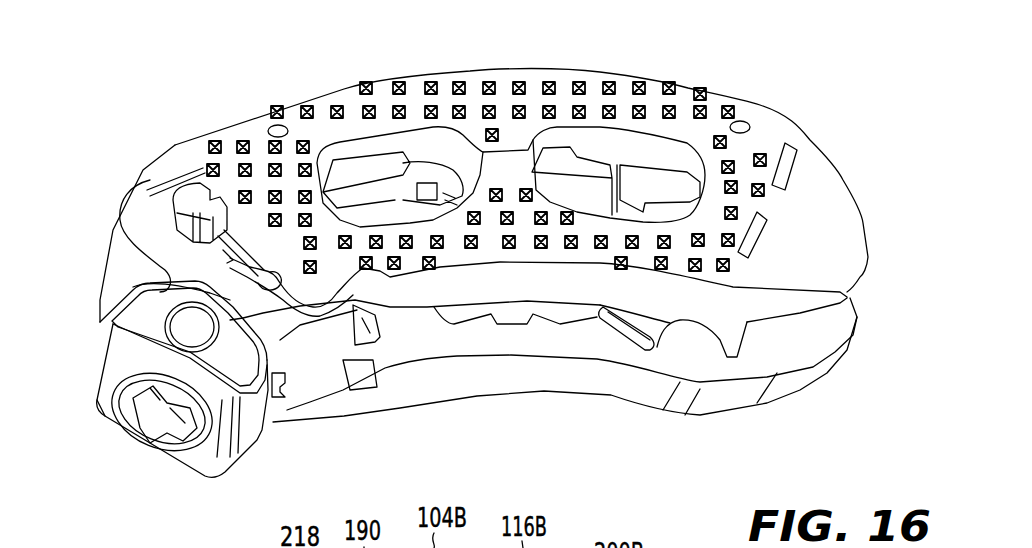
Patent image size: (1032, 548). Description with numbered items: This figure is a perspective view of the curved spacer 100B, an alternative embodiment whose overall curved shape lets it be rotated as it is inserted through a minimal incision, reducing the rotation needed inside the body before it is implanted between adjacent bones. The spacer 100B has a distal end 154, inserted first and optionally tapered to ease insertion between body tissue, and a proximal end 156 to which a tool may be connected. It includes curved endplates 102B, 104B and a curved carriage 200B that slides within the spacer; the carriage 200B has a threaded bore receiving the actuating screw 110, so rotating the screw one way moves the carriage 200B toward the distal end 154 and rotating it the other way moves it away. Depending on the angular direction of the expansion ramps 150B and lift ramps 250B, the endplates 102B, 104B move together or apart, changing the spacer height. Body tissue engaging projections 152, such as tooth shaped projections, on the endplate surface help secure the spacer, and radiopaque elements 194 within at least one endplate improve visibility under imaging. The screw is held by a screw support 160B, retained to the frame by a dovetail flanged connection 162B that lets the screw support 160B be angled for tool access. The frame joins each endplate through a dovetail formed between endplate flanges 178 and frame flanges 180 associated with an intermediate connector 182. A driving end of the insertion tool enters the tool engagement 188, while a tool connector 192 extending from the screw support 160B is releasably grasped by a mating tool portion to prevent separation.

The spacer 100B is at (848, 404).
The curved endplate 102B is at (833, 163).
The curved endplate 104B is at (484, 392).
The actuating screw 110 is at (183, 427).
The expansion ramp 150B is at (688, 344).
The body tissue engaging projections 152 is at (458, 78).
The distal end 154 is at (878, 330).
The proximal end 156 is at (85, 271).
The screw support 160B is at (93, 407).
The flanged connection 162B is at (298, 389).
The endplate flanges 178 is at (200, 190).
The frame flanges 180 is at (200, 193).
The intermediate connector 182 is at (210, 267).
The tool engagement 188 is at (160, 417).
The tool connector 192 is at (183, 318).
The radiopaque elements 194 is at (274, 123).
The curved carriage 200B is at (573, 185).
The lift ramp 250B is at (612, 337).